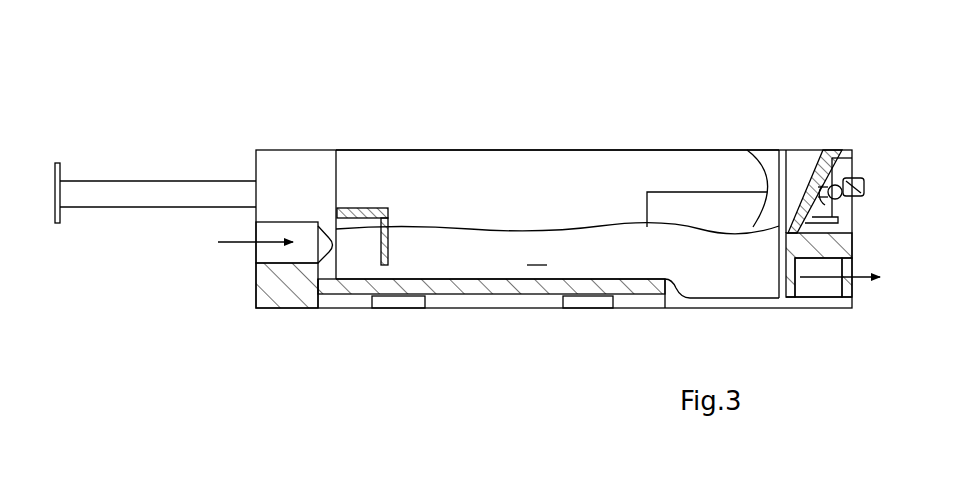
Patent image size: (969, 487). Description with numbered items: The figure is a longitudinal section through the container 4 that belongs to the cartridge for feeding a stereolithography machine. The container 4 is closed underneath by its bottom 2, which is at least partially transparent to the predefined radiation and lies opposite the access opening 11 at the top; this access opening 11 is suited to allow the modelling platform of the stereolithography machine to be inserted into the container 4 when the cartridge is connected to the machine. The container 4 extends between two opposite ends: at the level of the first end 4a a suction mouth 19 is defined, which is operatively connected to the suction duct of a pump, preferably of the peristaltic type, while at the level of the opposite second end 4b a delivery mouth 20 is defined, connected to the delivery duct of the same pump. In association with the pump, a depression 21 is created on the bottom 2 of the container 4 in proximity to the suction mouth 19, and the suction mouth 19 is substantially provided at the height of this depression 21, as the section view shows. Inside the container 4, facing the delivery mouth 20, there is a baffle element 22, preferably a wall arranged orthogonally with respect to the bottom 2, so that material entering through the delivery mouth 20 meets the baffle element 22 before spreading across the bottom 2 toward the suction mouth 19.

The bottom 2 is at (512, 322).
The container 4 is at (281, 122).
The first end 4a is at (773, 252).
The second end 4b is at (341, 163).
The access opening 11 is at (625, 122).
The suction mouth 19 is at (782, 268).
The delivery mouth 20 is at (335, 246).
The depression 21 is at (720, 267).
The baffle element 22 is at (382, 192).